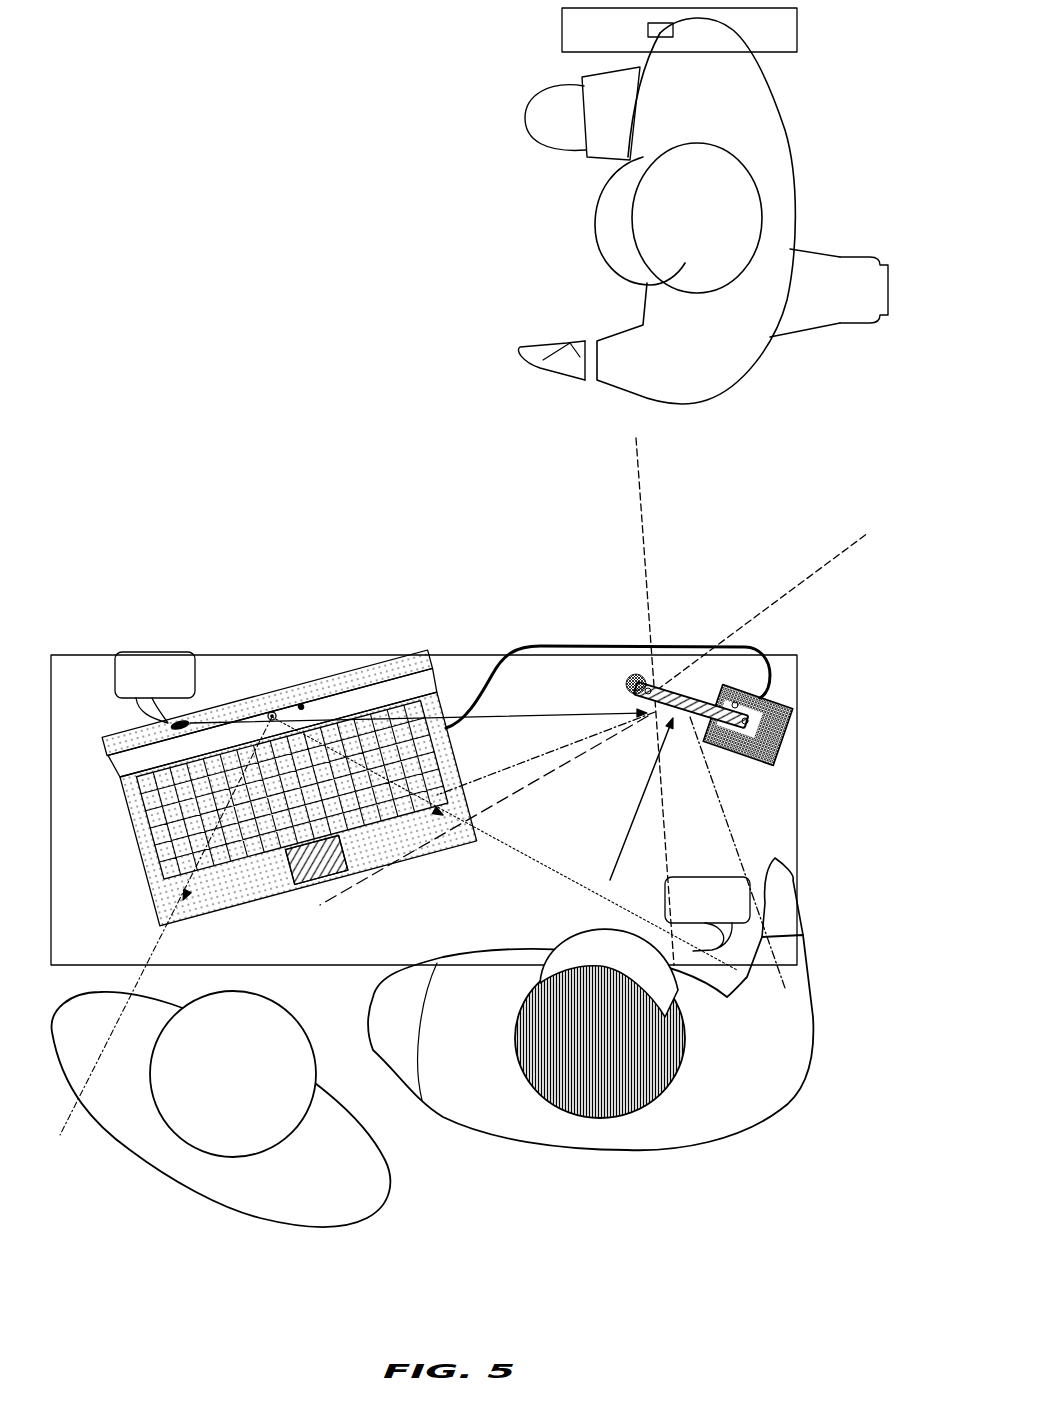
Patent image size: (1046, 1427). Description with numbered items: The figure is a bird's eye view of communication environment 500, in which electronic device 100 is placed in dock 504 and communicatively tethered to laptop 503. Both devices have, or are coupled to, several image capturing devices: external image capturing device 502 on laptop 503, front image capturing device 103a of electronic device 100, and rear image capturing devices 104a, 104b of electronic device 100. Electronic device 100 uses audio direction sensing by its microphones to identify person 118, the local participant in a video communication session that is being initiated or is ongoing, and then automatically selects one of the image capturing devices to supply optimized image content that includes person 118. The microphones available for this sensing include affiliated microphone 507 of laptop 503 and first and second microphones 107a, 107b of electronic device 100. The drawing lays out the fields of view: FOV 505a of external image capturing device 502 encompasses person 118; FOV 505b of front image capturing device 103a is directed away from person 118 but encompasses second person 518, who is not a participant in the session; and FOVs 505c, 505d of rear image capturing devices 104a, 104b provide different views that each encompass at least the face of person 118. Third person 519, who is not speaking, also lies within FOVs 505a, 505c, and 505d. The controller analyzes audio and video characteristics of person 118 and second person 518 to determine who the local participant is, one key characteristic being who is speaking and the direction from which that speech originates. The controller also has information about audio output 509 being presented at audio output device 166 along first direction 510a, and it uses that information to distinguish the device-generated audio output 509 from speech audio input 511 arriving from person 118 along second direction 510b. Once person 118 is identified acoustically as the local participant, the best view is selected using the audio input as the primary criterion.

The electronic device 100 is at (701, 651).
The front image capturing device 103a is at (652, 690).
The rear image capturing device 104a is at (647, 689).
The rear image capturing device 104b is at (748, 755).
The first microphone 107a is at (628, 676).
The second microphone 107b is at (733, 702).
The person 118 is at (773, 1123).
The audio output device 166 is at (267, 703).
The communication environment 500 is at (90, 568).
The external image capturing device 502 is at (270, 711).
The laptop 503 is at (247, 734).
The dock 504 is at (790, 706).
The field of view 505a is at (520, 781).
The field of view 505b is at (806, 578).
The field of view 505c is at (727, 831).
The field of view 505d is at (664, 850).
The affiliated microphone 507 is at (301, 707).
The audio output 509 is at (155, 691).
The first direction 510a is at (508, 712).
The second direction 510b is at (660, 770).
The speech audio input 511 is at (707, 914).
The second person 518 is at (610, 335).
The third person 519 is at (205, 1200).